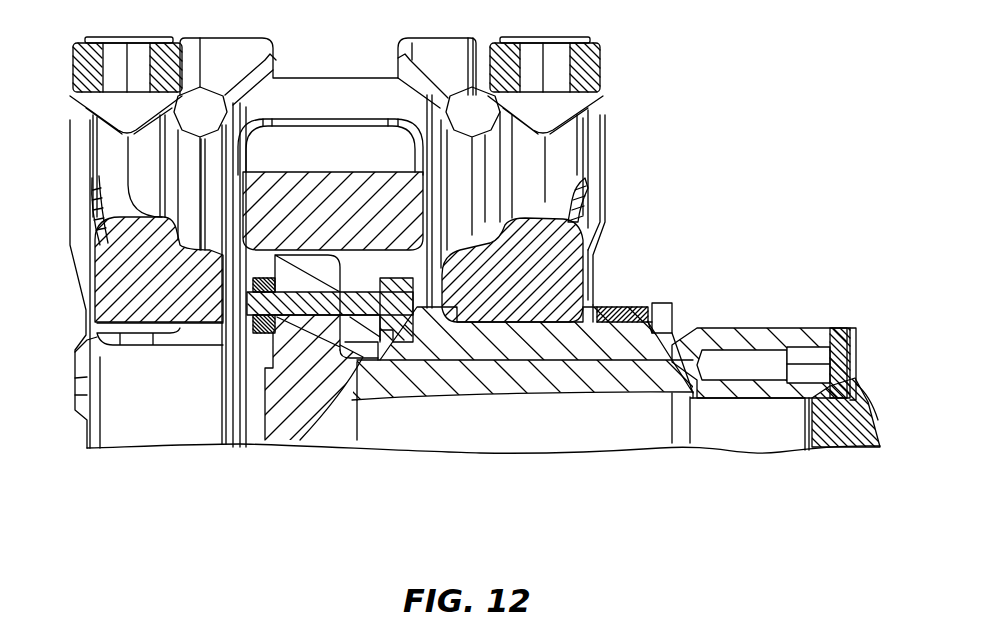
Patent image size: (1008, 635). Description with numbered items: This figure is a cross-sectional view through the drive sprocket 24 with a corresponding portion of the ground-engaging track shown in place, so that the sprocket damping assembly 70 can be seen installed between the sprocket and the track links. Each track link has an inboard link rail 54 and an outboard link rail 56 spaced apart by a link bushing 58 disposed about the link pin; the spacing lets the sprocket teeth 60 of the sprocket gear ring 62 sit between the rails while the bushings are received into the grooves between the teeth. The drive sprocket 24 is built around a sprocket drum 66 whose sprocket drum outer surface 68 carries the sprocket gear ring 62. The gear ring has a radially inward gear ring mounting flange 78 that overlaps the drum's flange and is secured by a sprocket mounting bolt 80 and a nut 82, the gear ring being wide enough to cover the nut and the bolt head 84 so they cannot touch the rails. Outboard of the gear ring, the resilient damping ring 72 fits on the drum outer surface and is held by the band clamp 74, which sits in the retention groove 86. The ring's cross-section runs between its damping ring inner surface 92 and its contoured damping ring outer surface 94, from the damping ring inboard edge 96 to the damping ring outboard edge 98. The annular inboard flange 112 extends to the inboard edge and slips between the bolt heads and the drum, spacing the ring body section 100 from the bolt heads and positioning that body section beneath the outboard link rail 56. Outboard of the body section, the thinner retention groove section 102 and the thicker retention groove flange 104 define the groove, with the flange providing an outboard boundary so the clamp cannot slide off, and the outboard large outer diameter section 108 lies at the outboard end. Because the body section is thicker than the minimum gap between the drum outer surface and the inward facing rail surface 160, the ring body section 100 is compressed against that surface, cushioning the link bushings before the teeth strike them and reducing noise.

The drive sprocket 24 is at (874, 404).
The inboard link rail 54 is at (117, 42).
The outboard link rail 56 is at (536, 44).
The link bushing 58 is at (305, 92).
The sprocket teeth 60 is at (363, 150).
The sprocket gear ring 62 is at (247, 190).
The sprocket drum 66 is at (447, 378).
The sprocket drum outer surface 68 is at (807, 328).
The sprocket damping assembly 70 is at (684, 250).
The damping ring 72 is at (437, 347).
The band clamp 74 is at (652, 305).
The gear ring mounting flange 78 is at (370, 263).
The sprocket mounting bolt 80 is at (290, 310).
The nut 82 is at (253, 324).
The bolt head 84 is at (413, 293).
The retention groove 86 is at (617, 292).
The damping ring inner surface 92 is at (516, 345).
The damping ring outer surface 94 is at (545, 300).
The damping ring inboard edge 96 is at (345, 372).
The damping ring outboard edge 98 is at (674, 318).
The ring body section 100 is at (470, 340).
The retention groove section 102 is at (620, 345).
The retention groove flange 104 is at (662, 303).
The outboard large outer diameter section 108 is at (758, 338).
The inboard flange 112 is at (408, 352).
The inward facing rail surface 160 is at (545, 355).